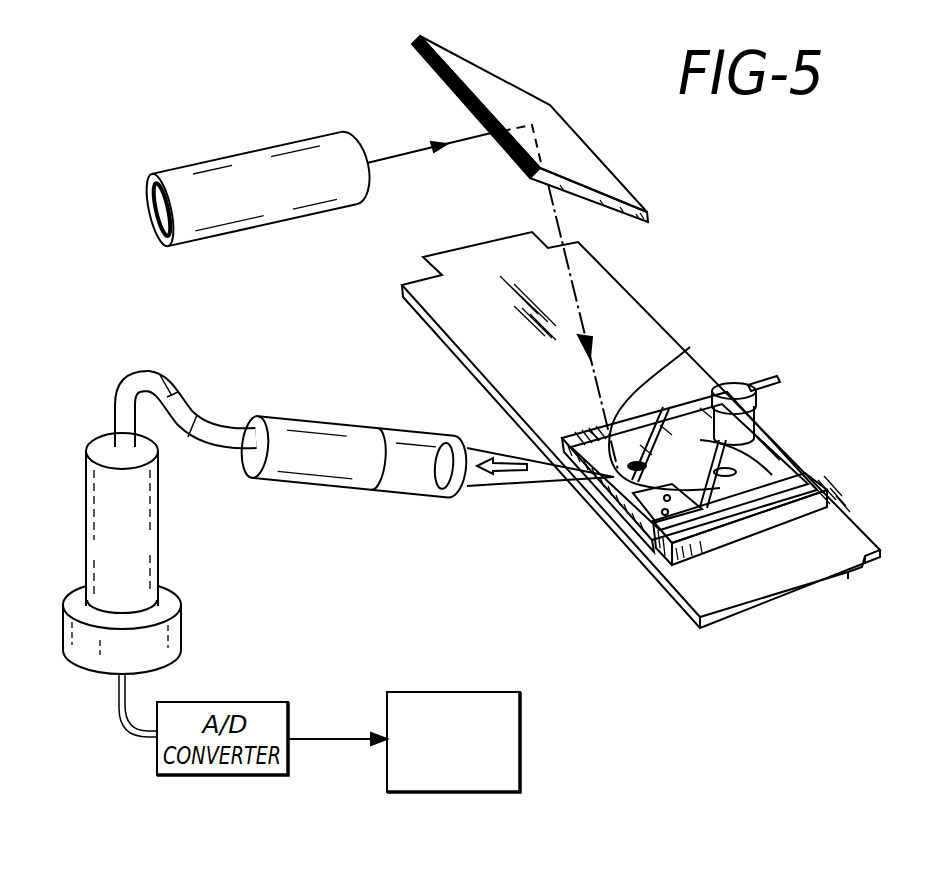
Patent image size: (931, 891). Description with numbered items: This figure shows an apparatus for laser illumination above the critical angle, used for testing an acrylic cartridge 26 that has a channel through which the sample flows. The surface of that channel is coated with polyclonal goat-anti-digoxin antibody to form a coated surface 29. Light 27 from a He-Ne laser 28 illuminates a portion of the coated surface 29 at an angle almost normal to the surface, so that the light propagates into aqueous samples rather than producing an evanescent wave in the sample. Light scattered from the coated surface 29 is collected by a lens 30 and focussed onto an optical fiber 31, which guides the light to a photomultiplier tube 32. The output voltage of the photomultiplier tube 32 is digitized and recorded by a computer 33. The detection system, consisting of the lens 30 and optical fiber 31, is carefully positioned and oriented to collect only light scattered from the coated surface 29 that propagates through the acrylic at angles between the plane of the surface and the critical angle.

The acrylic cartridge 26 is at (793, 437).
The light 27 is at (547, 205).
The He-Ne laser 28 is at (240, 153).
The coated surface 29 is at (718, 387).
The lens 30 is at (423, 440).
The optical fiber 31 is at (168, 377).
The photomultiplier tube 32 is at (160, 545).
The computer 33 is at (523, 762).